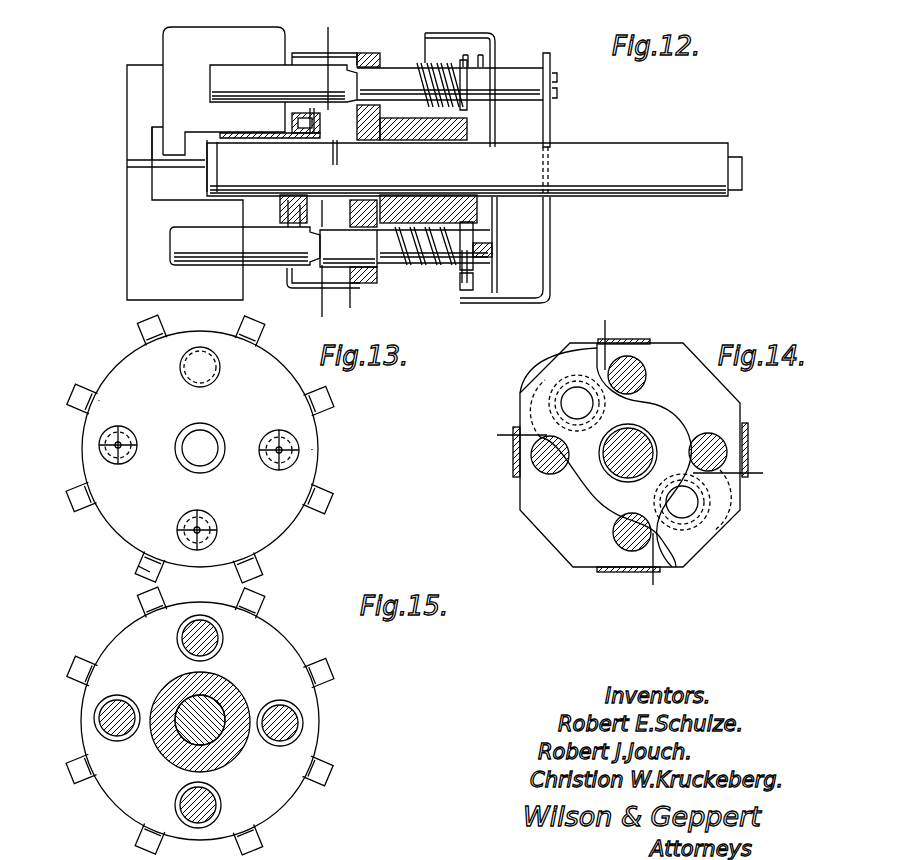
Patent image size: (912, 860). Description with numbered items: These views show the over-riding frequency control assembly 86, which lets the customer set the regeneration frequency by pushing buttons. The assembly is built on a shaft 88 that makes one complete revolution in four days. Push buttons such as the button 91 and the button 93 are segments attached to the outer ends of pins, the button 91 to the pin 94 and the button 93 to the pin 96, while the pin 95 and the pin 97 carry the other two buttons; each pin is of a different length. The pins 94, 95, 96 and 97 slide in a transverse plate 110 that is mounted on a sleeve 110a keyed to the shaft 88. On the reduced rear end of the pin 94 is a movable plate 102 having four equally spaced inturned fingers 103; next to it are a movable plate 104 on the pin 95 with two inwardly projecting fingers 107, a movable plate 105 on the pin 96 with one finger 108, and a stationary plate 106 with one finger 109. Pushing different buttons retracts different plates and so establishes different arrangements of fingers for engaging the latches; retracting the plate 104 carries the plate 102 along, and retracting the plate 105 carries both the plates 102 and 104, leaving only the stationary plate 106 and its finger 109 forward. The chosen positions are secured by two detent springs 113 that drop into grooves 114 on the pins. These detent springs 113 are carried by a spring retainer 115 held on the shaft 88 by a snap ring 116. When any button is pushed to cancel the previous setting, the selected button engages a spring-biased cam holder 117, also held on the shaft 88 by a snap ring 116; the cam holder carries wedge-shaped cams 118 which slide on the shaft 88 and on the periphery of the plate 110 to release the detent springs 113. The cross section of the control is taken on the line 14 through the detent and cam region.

In FIG. 12, the section line 14 is at (309, 170).
In FIG. 12, the frequency control assembly 86 is at (152, 48).
In FIG. 12, the shaft 88 is at (608, 147).
In FIG. 13, the shaft 88 is at (212, 433).
In FIG. 14, the shaft 88 is at (650, 440).
In FIG. 15, the shaft 88 is at (222, 695).
In FIG. 12, the push button 91 is at (198, 44).
In FIG. 12, the push button 93 is at (140, 295).
In FIG. 12, the pin 94 is at (268, 85).
In FIG. 13, the pin 94 is at (280, 431).
In FIG. 14, the pin 94 is at (612, 534).
In FIG. 15, the pin 94 is at (118, 740).
In FIG. 13, the pin 95 is at (217, 535).
In FIG. 14, the pin 95 is at (715, 445).
In FIG. 15, the pin 95 is at (222, 800).
In FIG. 12, the pin 96 is at (247, 247).
In FIG. 13, the pin 96 is at (136, 438).
In FIG. 14, the pin 96 is at (644, 365).
In FIG. 15, the pin 96 is at (280, 706).
In FIG. 13, the pin 97 is at (222, 372).
In FIG. 14, the pin 97 is at (553, 468).
In FIG. 15, the pin 97 is at (222, 640).
In FIG. 12, the movable plate 102 is at (552, 248).
In FIG. 13, the movable plate 102 is at (165, 499).
In FIG. 12, the fingers 103 is at (480, 300).
In FIG. 13, the fingers 103 is at (142, 332).
In FIG. 15, the fingers 103 is at (75, 665).
In FIG. 13, the movable plate 104 is at (322, 452).
In FIG. 12, the movable plate 105 is at (478, 12).
In FIG. 12, the stationary plate 106 is at (452, 0).
In FIG. 15, the stationary plate 106 is at (160, 667).
In FIG. 12, the fingers 107 is at (497, 36).
In FIG. 13, the fingers 107 is at (80, 390).
In FIG. 15, the fingers 107 is at (330, 676).
In FIG. 13, the finger 108 is at (135, 576).
In FIG. 15, the finger 108 is at (265, 842).
In FIG. 13, the finger 109 is at (268, 331).
In FIG. 15, the finger 109 is at (152, 598).
In FIG. 12, the transverse plate 110 is at (410, 60).
In FIG. 14, the transverse plate 110 is at (555, 540).
In FIG. 12, the sleeve 110a is at (412, 136).
In FIG. 12, the detent springs 113 is at (392, 278).
In FIG. 14, the detent springs 113 is at (610, 335).
In FIG. 12, the grooves 114 is at (367, 52).
In FIG. 14, the spring retainer 115 is at (648, 403).
In FIG. 12, the snap ring 116 is at (222, 132).
In FIG. 12, the cam holder 117 is at (275, 195).
In FIG. 12, the wedge-shaped cams 118 is at (336, 53).
In FIG. 14, the wedge-shaped cams 118 is at (632, 340).